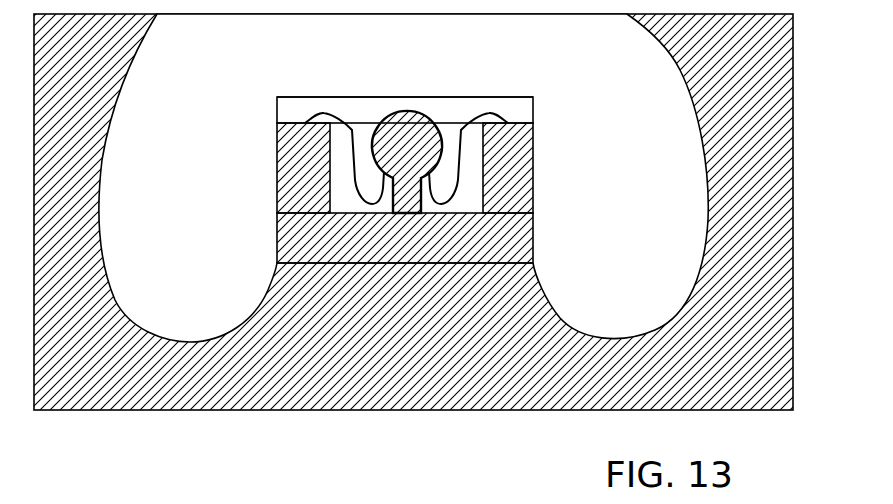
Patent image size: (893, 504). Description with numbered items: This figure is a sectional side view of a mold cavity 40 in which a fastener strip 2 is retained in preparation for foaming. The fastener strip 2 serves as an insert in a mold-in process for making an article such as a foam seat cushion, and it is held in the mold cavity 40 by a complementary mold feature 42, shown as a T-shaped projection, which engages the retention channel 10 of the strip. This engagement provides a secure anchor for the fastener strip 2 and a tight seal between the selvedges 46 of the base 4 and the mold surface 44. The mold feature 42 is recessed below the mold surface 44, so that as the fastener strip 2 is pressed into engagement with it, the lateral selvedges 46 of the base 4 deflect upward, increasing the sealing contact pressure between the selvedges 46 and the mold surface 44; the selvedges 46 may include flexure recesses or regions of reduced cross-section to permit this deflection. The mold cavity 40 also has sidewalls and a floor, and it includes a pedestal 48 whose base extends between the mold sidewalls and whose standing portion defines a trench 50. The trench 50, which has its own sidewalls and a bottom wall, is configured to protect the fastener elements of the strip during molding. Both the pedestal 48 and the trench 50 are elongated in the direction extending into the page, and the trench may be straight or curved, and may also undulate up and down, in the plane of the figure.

The fastener strip 2 is at (411, 146).
The base 4 is at (298, 97).
The retention channel 10 is at (380, 118).
The mold cavity 40 is at (187, 322).
The mold feature 42 is at (408, 135).
The mold surface 44 is at (277, 123).
The selvedges 46 is at (530, 97).
The pedestal 48 is at (535, 160).
The trench 50 is at (473, 197).